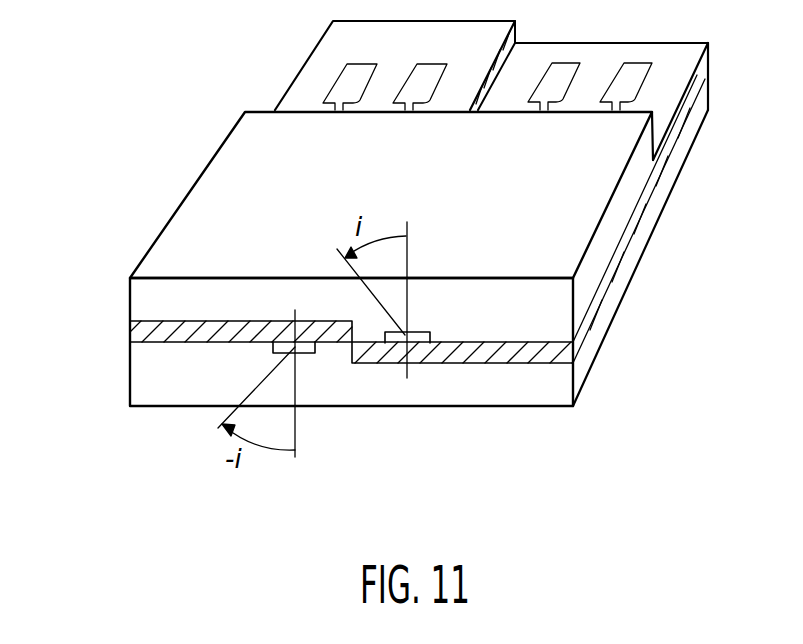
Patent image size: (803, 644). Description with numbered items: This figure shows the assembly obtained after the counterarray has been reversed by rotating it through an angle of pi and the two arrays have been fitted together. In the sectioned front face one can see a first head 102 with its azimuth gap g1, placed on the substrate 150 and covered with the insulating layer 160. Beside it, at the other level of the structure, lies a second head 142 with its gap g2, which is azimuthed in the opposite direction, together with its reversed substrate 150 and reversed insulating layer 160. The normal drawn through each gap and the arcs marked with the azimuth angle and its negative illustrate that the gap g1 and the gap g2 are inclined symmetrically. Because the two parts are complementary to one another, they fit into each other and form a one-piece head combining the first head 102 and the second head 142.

The substrate 150 is at (137, 298).
The insulating layer 160 is at (140, 330).
The first head 102 is at (271, 348).
The second head 142 is at (432, 331).
The azimuth gap g1 is at (302, 355).
The gap g2 is at (398, 348).